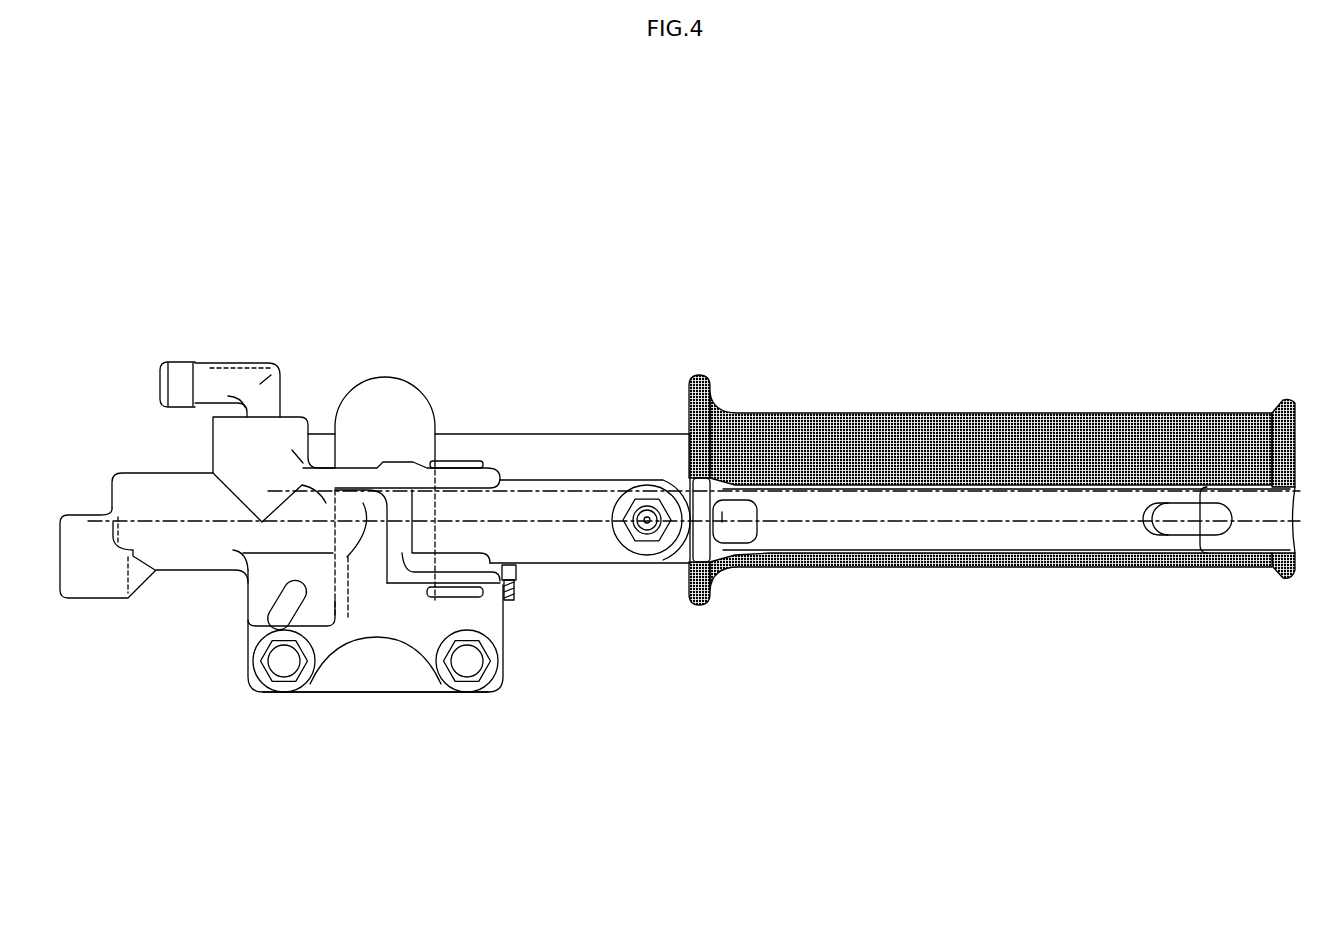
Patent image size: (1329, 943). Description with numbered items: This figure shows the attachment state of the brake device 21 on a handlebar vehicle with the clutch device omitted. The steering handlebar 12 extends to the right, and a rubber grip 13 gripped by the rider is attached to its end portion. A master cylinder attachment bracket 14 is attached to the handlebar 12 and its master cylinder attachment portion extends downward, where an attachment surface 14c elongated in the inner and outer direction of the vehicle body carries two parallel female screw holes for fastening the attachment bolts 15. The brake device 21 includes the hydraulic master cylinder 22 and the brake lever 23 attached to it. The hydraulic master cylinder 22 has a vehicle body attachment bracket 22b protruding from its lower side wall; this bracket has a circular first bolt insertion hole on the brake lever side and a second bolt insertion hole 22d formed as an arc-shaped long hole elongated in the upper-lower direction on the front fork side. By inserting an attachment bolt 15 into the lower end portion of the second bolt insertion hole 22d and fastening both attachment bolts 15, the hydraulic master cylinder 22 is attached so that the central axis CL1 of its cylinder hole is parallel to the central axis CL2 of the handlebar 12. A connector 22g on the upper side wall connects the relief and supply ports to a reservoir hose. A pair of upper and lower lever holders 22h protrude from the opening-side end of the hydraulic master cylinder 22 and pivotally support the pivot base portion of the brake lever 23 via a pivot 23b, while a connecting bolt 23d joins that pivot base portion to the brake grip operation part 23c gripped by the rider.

The steering handlebar 12 is at (607, 445).
The rubber grip 13 is at (970, 420).
The master cylinder attachment bracket 14 is at (225, 674).
The attachment surface 14c is at (370, 697).
The attachment bolt 15 is at (283, 668).
The brake device 21 is at (169, 598).
The hydraulic master cylinder 22 is at (148, 485).
The vehicle body attachment bracket 22b is at (418, 655).
The second bolt insertion hole 22d is at (270, 607).
The connector 22g is at (223, 372).
The lever holder 22h is at (490, 465).
The brake lever 23 is at (652, 582).
The pivot 23b is at (453, 462).
The brake grip operation part 23c is at (963, 545).
The connecting bolt 23d is at (645, 496).
The central axis of the cylinder hole CL1 is at (585, 528).
The central axis of the handlebar CL2 is at (543, 488).